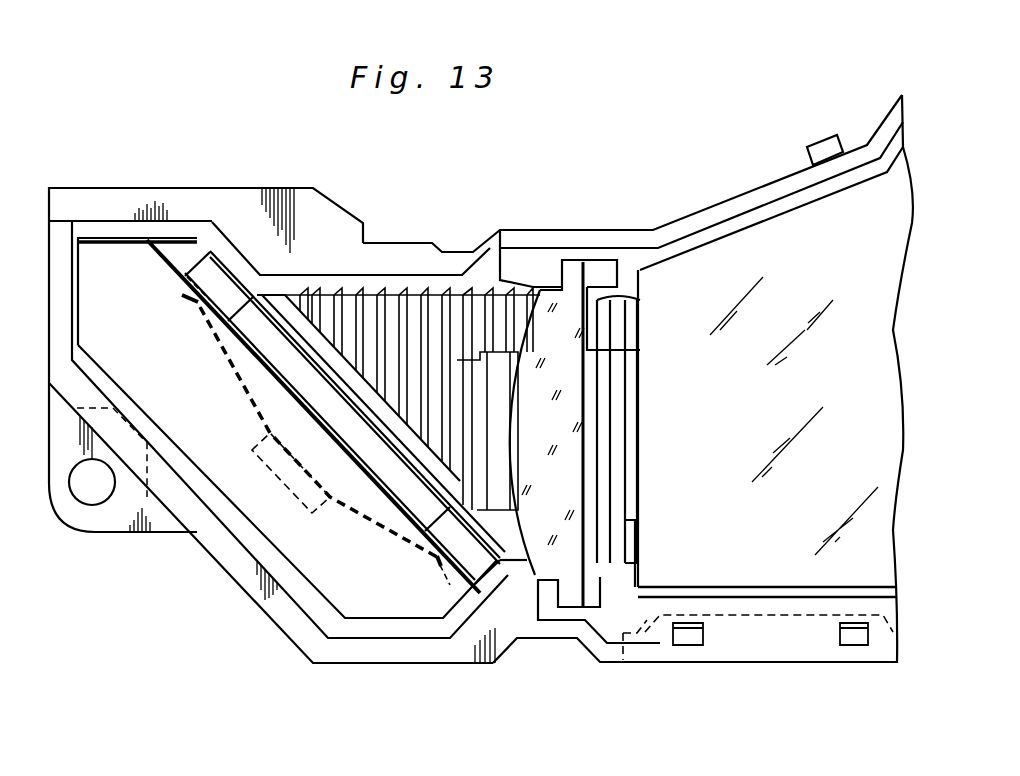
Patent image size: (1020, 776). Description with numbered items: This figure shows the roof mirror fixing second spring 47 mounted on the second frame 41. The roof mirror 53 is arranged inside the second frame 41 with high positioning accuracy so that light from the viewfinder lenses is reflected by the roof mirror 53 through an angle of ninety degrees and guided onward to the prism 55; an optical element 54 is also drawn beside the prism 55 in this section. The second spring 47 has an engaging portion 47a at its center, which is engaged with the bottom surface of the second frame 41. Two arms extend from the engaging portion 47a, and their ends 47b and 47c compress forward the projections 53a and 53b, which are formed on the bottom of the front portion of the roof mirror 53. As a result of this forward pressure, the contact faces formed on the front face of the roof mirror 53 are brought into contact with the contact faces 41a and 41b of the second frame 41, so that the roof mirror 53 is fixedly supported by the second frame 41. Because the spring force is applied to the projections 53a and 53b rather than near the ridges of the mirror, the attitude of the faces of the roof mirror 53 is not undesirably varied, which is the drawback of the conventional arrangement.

The second frame 41 is at (288, 617).
The contact face 41a is at (218, 236).
The contact face 41b is at (513, 582).
The second spring 47 is at (367, 520).
The engaging portion 47a is at (287, 497).
The arm end 47b is at (193, 303).
The arm end 47c is at (448, 588).
The roof mirror 53 is at (258, 502).
The projection 53a is at (205, 289).
The projection 53b is at (447, 557).
The lens 54 is at (560, 428).
The prism 55 is at (710, 428).